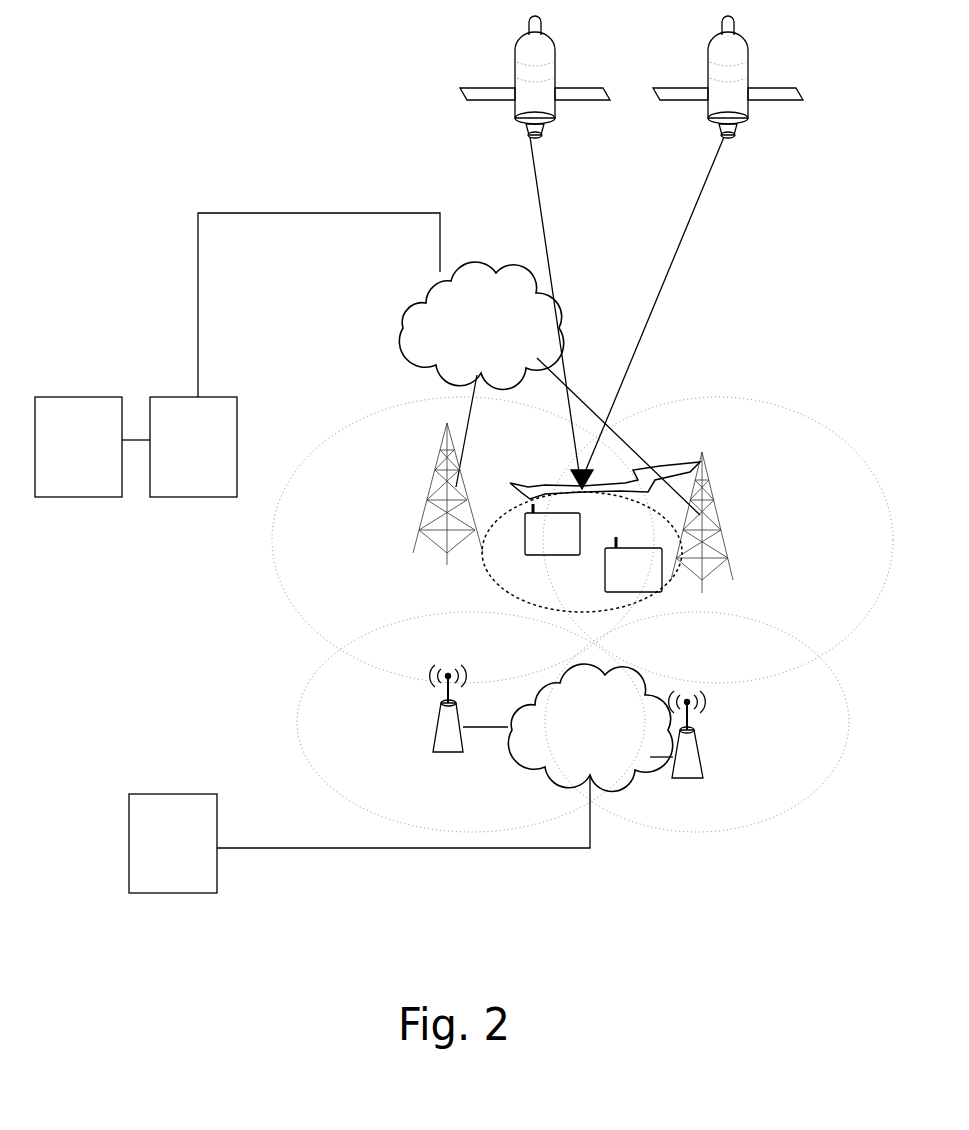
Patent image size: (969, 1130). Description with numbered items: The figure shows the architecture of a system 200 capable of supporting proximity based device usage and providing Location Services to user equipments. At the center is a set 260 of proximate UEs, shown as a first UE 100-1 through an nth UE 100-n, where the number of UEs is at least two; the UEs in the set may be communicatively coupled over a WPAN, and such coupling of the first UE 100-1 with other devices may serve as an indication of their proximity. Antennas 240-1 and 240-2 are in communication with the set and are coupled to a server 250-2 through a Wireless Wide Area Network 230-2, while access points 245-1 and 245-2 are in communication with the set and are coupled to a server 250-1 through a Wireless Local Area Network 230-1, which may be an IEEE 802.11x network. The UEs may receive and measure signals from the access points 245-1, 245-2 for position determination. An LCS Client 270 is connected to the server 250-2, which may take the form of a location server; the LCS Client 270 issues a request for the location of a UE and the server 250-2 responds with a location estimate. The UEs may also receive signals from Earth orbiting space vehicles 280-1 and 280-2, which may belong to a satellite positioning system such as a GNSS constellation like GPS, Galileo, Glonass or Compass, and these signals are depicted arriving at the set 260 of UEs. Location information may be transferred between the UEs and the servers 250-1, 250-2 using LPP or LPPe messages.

The system 200 is at (138, 32).
The Space Vehicle 280-1 is at (583, 88).
The Space Vehicle 280-2 is at (775, 90).
The Wireless Wide Area Network 230-2 is at (410, 346).
The Wireless Local Area Network 230-1 is at (635, 772).
The antenna 240-1 is at (432, 500).
The antenna 240-2 is at (702, 517).
The set of proximate UEs 260 is at (490, 578).
The UE 100-1 is at (552, 529).
The UE 100-n is at (633, 564).
The Access Point 245-1 is at (445, 729).
The Access Point 245-2 is at (692, 720).
The LCS Client 270 is at (57, 397).
The server 250-2 is at (218, 397).
The server 250-1 is at (178, 794).